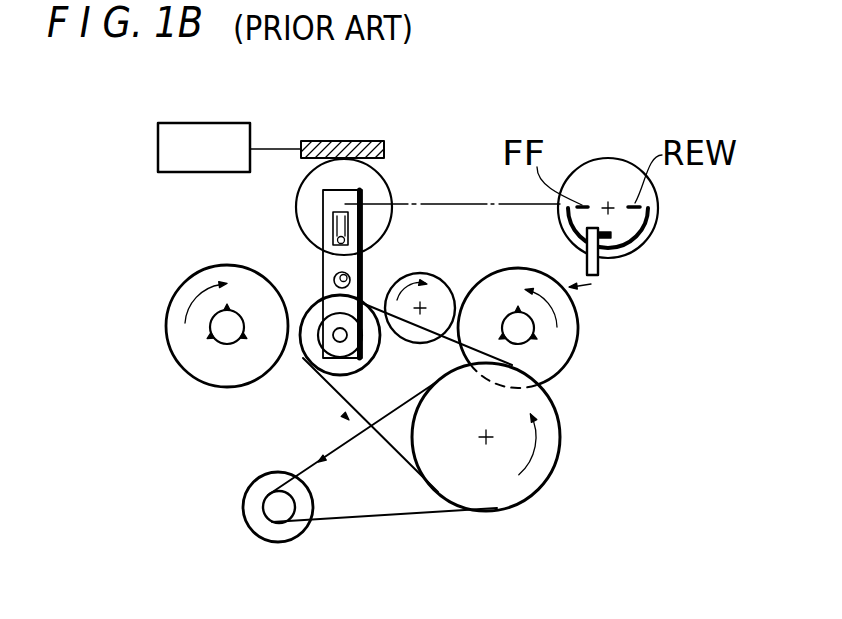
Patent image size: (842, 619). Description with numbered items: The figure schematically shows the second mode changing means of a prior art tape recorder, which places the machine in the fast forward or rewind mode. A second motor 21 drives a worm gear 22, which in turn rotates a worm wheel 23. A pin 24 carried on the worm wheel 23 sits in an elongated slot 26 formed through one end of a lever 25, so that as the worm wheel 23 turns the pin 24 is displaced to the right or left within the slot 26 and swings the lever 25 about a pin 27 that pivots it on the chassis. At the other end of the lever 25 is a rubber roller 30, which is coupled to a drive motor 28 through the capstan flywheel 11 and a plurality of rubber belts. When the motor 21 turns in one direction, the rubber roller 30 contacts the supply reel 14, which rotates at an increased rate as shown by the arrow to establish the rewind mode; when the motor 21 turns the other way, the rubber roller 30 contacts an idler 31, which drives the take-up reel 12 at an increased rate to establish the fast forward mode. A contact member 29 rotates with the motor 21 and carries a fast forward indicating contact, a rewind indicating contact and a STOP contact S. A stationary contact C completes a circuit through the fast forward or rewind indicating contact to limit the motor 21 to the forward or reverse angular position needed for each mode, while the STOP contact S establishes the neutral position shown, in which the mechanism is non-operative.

The capstan flywheel 11 is at (557, 477).
The take-up reel 12 is at (560, 377).
The supply reel 14 is at (176, 357).
The second motor 21 is at (208, 123).
The worm gear 22 is at (348, 140).
The worm wheel 23 is at (380, 171).
The pin 24 is at (350, 236).
The lever 25 is at (362, 270).
The elongated slot 26 is at (333, 220).
The pin 27 is at (334, 275).
The drive motor 28 is at (260, 533).
The contact member 29 is at (608, 158).
The rubber roller 30 is at (303, 345).
The idler 31 is at (447, 283).
The STOP contact S is at (612, 237).
The stationary contact C is at (597, 273).